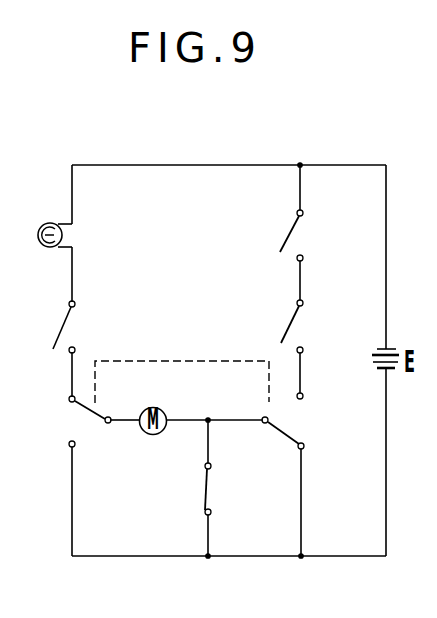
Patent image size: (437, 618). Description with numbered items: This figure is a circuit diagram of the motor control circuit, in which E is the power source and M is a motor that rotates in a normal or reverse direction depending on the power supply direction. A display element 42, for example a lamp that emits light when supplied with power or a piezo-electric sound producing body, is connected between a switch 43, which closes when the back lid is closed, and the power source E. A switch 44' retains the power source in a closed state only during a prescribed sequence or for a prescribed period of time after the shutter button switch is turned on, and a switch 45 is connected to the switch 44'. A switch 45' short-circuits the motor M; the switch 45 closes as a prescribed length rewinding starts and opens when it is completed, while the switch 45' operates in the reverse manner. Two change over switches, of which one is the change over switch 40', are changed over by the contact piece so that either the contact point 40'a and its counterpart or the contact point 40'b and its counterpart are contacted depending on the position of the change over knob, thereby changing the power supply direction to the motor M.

The display element 42 is at (64, 233).
The switch 43 is at (75, 318).
The contact point 40'a is at (67, 419).
The change over switch 40' is at (102, 444).
The contact point 40'b is at (52, 498).
The switch 45' is at (230, 489).
The switch 44' is at (313, 212).
The switch 45 is at (310, 307).